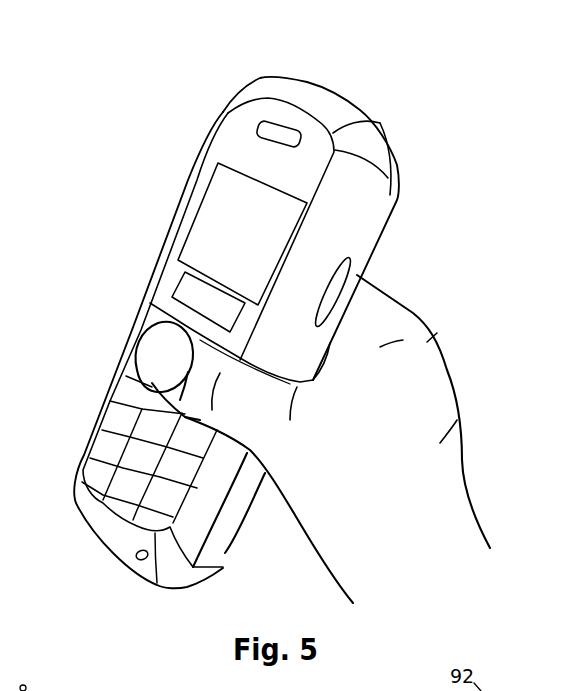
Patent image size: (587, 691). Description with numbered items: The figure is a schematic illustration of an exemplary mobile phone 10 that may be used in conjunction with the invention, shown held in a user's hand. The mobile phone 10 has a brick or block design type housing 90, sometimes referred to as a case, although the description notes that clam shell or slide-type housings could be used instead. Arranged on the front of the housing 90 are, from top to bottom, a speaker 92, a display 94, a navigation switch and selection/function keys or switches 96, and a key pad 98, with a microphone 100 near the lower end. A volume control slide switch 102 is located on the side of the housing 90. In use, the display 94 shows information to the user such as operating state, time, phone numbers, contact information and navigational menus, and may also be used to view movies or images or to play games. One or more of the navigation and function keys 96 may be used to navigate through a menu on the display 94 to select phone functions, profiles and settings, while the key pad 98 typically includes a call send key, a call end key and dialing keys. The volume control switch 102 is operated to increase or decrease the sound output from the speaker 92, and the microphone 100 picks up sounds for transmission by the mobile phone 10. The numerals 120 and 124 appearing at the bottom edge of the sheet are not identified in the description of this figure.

The mobile phone 10 is at (243, 88).
The housing 90 is at (215, 125).
The speaker 92 is at (263, 128).
The display 94 is at (218, 200).
The navigation switch and selection/function keys or switches 96 is at (158, 317).
The key pad 98 is at (128, 387).
The microphone 100 is at (139, 561).
The volume control slide switch 102 is at (347, 266).
The reference numeral of adjacent figure 120 is at (60, 678).
The reference numeral of adjacent figure 124 is at (175, 681).